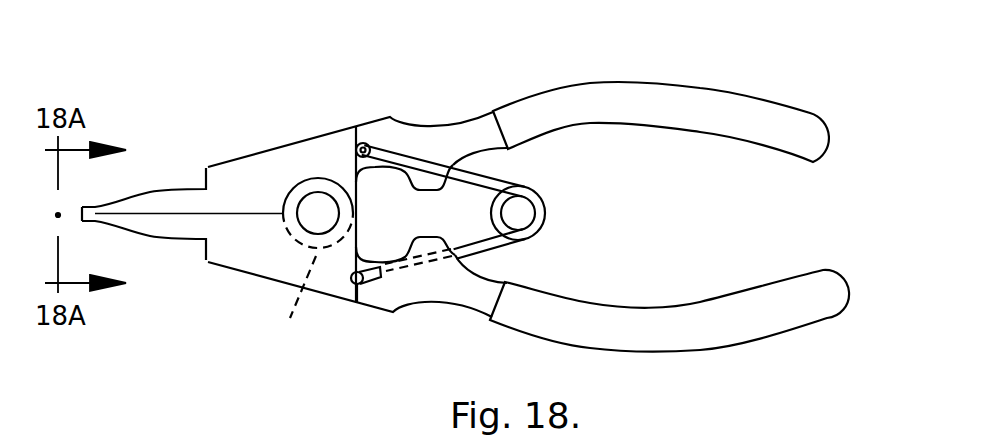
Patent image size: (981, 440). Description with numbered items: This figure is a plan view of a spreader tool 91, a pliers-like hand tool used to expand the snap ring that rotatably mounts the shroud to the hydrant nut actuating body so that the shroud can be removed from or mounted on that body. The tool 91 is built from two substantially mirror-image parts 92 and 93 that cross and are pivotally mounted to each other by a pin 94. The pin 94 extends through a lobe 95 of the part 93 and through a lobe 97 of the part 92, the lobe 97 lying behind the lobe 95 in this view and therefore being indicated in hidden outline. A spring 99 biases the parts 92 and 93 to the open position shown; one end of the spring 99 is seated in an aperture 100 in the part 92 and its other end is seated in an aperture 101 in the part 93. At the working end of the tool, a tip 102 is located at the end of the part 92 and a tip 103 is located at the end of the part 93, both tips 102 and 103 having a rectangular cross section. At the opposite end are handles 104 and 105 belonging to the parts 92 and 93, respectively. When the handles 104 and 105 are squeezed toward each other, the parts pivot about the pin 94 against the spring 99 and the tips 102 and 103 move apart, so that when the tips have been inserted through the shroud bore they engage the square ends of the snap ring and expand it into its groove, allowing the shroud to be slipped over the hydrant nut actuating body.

The spreader tool 91 is at (453, 97).
The part 92 is at (391, 118).
The part 93 is at (388, 313).
The pin 94 is at (331, 213).
The lobe 95 is at (316, 178).
The lobe 97 is at (292, 301).
The spring 99 is at (546, 213).
The aperture 100 is at (362, 143).
The aperture 101 is at (357, 303).
The tip 102 is at (108, 178).
The tip 103 is at (85, 221).
The handle 104 is at (748, 42).
The handle 105 is at (720, 347).